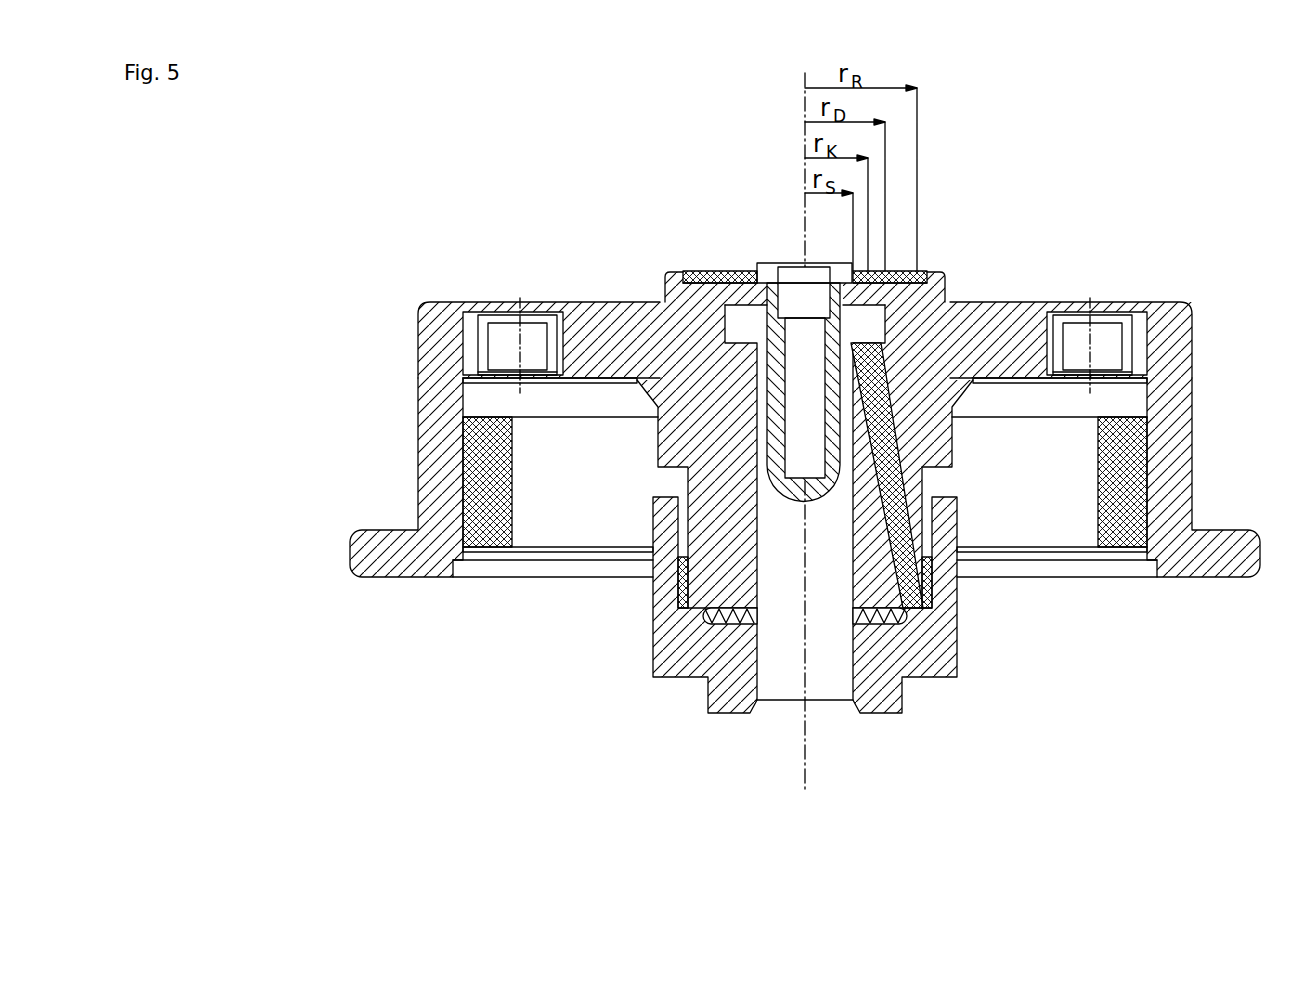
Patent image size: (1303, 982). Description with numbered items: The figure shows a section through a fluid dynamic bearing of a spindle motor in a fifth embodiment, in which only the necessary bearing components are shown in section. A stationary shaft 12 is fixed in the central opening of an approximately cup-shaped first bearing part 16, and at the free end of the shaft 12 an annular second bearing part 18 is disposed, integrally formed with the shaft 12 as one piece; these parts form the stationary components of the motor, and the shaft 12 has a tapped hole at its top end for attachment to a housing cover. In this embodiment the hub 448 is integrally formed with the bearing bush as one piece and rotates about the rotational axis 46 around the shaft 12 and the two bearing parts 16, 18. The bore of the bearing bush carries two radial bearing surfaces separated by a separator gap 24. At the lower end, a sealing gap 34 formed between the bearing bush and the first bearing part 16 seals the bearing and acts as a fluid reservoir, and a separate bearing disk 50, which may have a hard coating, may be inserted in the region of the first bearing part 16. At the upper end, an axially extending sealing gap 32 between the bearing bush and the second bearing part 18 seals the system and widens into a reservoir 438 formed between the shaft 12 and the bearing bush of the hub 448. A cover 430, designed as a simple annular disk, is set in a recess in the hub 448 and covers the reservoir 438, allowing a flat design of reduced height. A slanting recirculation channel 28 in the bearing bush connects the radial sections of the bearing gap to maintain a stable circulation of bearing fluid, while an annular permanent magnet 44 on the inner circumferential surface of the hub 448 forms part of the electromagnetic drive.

The shaft 12 is at (750, 266).
The first bearing part 16 is at (733, 675).
The second bearing part 18 is at (888, 334).
The separator gap 24 is at (932, 494).
The recirculation channel 28 is at (954, 460).
The sealing gap 32 is at (757, 349).
The sealing gap 34 is at (1072, 515).
The annular permanent magnet 44 is at (497, 470).
The rotational axis 46 is at (770, 281).
The bearing disk 50 is at (713, 630).
The cover 430 is at (724, 303).
The reservoir 438 is at (683, 273).
The hub 448 is at (427, 473).